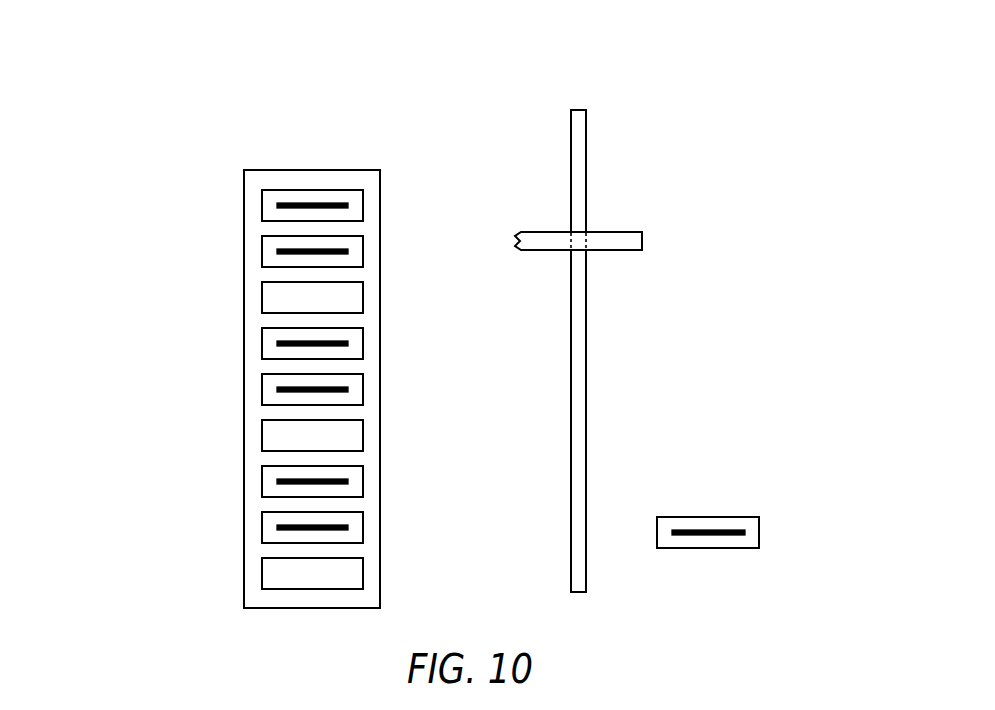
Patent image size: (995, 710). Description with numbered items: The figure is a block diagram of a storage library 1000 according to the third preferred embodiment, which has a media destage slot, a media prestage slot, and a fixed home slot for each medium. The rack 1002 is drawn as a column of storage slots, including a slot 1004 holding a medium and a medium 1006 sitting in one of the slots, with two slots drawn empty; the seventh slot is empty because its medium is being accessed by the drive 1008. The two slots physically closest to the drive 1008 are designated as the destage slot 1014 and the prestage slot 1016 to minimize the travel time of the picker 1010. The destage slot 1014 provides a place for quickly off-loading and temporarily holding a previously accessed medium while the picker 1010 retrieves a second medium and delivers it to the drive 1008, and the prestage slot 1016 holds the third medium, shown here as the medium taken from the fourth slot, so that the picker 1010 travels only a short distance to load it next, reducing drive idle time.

The storage library 1000 is at (520, 92).
The rack 1002 is at (345, 169).
The storage slot with cartridge 1004 is at (363, 204).
The cartridge in slot 1006 is at (340, 344).
The drive 1008 is at (759, 527).
The picker 1010 is at (642, 236).
The destage slot 1014 is at (363, 571).
The prestage slot 1016 is at (363, 526).